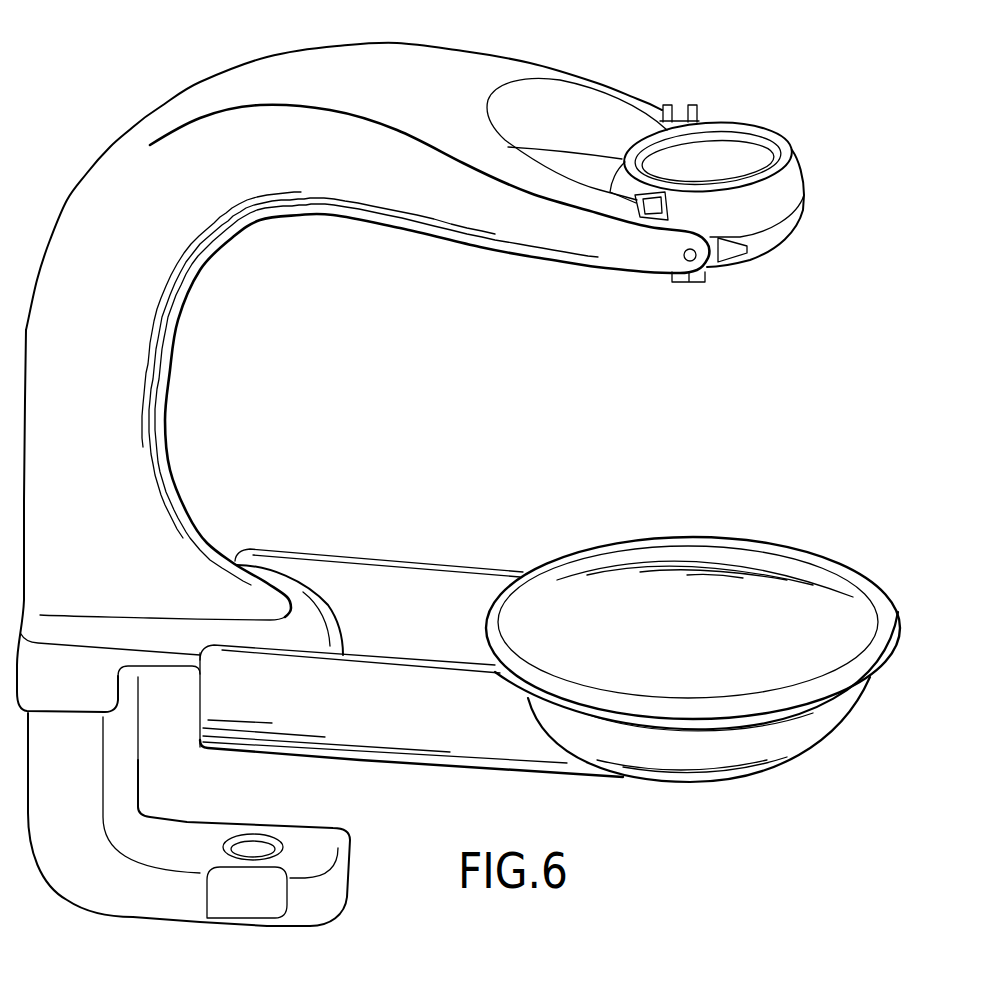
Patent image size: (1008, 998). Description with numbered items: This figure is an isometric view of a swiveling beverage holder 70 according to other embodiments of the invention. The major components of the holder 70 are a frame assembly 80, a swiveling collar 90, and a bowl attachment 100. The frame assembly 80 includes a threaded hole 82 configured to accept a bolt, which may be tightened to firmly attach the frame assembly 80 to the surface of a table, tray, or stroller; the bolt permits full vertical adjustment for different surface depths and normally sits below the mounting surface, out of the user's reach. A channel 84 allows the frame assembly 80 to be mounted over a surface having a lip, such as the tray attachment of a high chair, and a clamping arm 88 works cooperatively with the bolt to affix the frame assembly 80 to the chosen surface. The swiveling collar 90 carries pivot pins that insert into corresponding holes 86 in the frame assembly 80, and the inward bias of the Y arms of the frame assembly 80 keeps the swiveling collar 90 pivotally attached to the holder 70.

The holder 70 is at (146, 73).
The frame assembly 80 is at (166, 387).
The threaded hole 82 is at (253, 834).
The channel 84 is at (160, 672).
The holes 86 is at (690, 261).
The clamping arm 88 is at (353, 627).
The swiveling collar 90 is at (808, 207).
The bowl attachment 100 is at (693, 536).